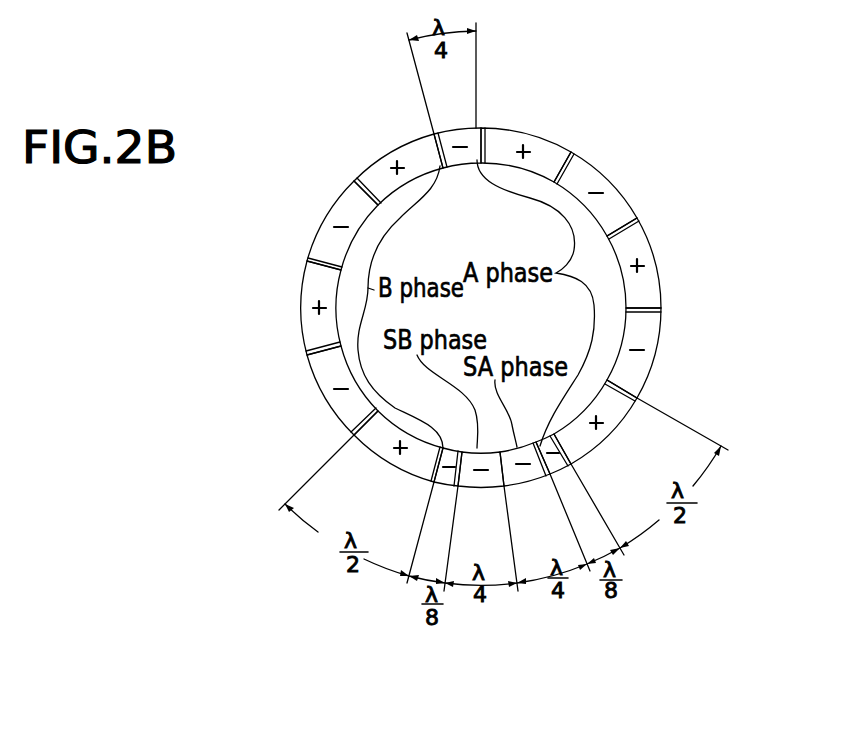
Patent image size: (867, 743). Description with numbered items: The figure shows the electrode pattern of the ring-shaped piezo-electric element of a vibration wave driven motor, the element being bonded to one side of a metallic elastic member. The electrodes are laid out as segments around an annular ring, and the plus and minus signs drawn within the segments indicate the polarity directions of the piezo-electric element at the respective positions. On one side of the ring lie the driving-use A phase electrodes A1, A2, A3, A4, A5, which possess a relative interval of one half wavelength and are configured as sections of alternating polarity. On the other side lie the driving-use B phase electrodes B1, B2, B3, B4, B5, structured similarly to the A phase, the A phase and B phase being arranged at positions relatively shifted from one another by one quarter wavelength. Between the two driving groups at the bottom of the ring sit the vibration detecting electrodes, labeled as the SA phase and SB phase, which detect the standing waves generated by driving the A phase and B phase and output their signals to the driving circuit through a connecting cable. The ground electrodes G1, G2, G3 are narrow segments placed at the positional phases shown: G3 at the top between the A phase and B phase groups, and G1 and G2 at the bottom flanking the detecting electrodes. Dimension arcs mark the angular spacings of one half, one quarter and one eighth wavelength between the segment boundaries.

The driving-use A phase electrode A1 is at (597, 437).
The driving-use A phase electrode A2 is at (640, 386).
The driving-use A phase electrode A3 is at (652, 289).
The driving-use A phase electrode A4 is at (623, 207).
The driving-use A phase electrode A5 is at (551, 146).
The driving-use B phase electrode B1 is at (405, 465).
The driving-use B phase electrode B2 is at (322, 380).
The driving-use B phase electrode B3 is at (313, 291).
The driving-use B phase electrode B4 is at (341, 206).
The driving-use B phase electrode B5 is at (408, 148).
The ground electrode G1 is at (538, 447).
The ground electrode G2 is at (450, 447).
The ground electrode G3 is at (454, 136).